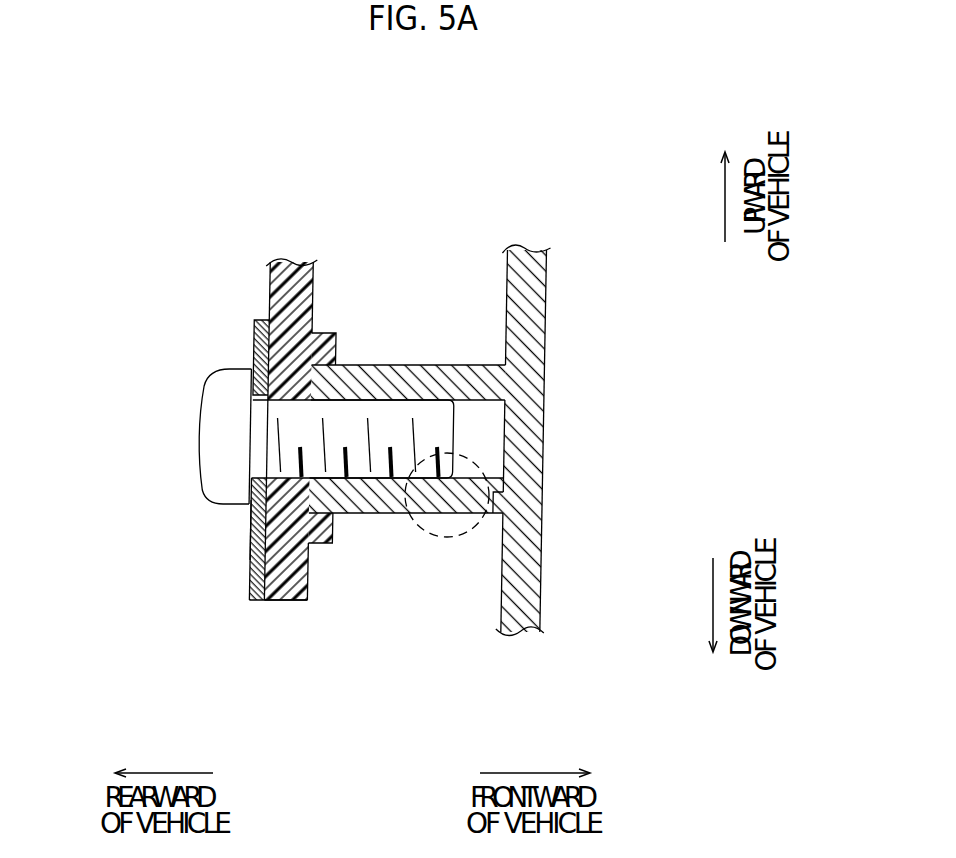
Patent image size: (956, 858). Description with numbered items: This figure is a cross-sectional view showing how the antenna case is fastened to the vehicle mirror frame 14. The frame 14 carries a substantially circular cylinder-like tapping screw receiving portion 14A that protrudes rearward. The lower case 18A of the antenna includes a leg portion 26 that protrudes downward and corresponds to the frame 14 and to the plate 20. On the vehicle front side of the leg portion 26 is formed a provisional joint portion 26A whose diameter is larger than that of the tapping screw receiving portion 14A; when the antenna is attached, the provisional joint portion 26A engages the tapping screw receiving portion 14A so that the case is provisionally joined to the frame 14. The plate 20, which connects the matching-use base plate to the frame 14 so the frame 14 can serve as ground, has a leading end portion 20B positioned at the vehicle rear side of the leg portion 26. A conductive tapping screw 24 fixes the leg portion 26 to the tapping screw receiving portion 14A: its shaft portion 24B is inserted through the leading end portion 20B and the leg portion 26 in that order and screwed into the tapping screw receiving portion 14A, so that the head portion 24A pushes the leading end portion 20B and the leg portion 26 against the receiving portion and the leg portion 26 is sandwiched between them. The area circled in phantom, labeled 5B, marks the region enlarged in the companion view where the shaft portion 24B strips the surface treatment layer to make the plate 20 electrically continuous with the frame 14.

The frame 14 is at (545, 558).
The tapping screw receiving portion 14A is at (455, 515).
The lower case 18A is at (279, 604).
The plate 20 is at (246, 578).
The leading end portion 20B is at (250, 534).
The tapping screw 24 is at (198, 439).
The head portion 24A is at (220, 402).
The shaft portion 24B is at (382, 415).
The leg portion 26 is at (305, 572).
The provisional joint portion 26A is at (330, 331).
The detail region of FIG. 5B is at (489, 493).